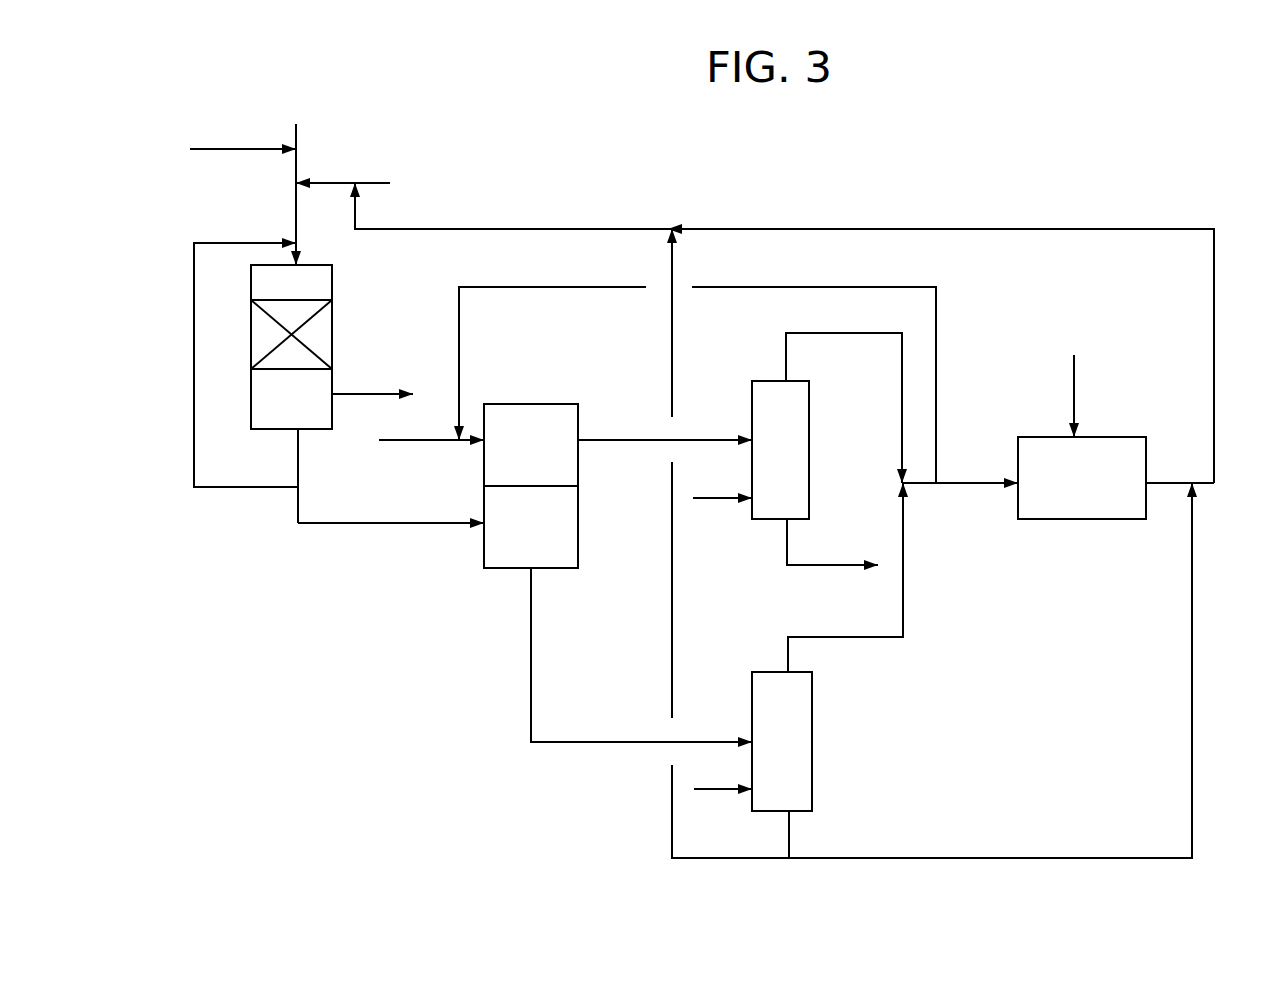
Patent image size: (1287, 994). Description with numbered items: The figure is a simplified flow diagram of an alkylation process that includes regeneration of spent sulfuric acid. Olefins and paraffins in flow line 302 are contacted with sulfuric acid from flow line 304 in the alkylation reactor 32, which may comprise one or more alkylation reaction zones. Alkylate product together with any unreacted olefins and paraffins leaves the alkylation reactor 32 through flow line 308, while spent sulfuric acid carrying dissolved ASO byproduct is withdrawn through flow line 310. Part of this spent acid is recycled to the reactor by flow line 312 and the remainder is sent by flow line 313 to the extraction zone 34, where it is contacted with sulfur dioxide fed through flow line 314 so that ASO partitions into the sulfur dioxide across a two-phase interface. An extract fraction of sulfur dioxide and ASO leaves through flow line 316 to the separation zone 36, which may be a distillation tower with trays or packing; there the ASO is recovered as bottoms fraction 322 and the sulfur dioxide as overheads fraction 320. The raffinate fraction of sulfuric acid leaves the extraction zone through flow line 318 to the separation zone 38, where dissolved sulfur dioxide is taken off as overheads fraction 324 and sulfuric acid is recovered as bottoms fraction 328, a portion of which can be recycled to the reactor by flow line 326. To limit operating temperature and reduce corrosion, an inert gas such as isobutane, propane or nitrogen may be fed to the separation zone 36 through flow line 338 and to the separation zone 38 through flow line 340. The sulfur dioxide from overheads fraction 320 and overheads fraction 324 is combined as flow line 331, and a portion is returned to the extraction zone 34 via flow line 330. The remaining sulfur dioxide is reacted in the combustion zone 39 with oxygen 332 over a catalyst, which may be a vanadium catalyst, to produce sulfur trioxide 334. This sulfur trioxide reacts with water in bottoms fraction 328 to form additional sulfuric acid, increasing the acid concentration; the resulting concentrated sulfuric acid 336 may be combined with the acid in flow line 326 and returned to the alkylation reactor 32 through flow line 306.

The alkylation reactor 32 is at (291, 347).
The extraction zone 34 is at (556, 391).
The separation zone 36 is at (780, 450).
The separation zone 38 is at (782, 741).
The combustion zone 39 is at (1082, 478).
The flow line 302 is at (243, 187).
The flow line 304 is at (343, 164).
The flow line 306 is at (511, 206).
The flow line 308 is at (372, 381).
The flow line 310 is at (276, 476).
The flow line 312 is at (218, 365).
The flow line 313 is at (391, 510).
The flow line 314 is at (431, 428).
The flow line 316 is at (665, 420).
The flow line 318 is at (641, 655).
The overheads fraction 320 is at (844, 395).
The bottoms fraction 322 is at (832, 542).
The overheads fraction 324 is at (845, 577).
The flow line 326 is at (730, 543).
The bottoms fraction 328 is at (990, 670).
The flow line 330 is at (723, 385).
The flow line 331 is at (960, 502).
The oxygen 332 is at (1100, 396).
The sulfur trioxide 334 is at (1180, 464).
The concentrated sulfuric acid 336 is at (972, 356).
The flow line 338 is at (722, 485).
The flow line 340 is at (723, 775).